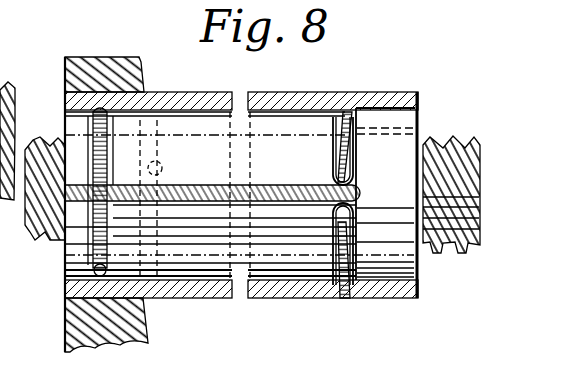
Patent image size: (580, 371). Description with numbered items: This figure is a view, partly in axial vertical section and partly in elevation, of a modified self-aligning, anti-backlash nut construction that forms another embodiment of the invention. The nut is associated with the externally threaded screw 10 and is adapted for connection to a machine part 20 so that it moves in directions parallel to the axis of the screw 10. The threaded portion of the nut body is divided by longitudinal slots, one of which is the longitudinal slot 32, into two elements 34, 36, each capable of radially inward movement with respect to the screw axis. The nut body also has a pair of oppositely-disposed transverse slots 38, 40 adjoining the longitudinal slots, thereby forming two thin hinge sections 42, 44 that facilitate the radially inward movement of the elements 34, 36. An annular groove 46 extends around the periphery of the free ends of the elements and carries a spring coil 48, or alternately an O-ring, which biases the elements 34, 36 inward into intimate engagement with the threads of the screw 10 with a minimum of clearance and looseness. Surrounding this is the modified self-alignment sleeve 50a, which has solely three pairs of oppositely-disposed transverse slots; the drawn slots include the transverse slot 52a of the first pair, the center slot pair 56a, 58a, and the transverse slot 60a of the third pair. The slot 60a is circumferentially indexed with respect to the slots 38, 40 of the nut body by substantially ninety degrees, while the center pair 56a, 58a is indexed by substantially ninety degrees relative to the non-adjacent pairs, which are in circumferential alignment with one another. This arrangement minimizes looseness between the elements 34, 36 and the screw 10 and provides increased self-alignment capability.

The screw 10 is at (1, 92).
The machine part 20 is at (96, 62).
The longitudinal slot 32 is at (298, 184).
The element 34 is at (183, 125).
The element 36 is at (185, 263).
The transverse slot 38 is at (335, 147).
The transverse slot 40 is at (335, 300).
The hinge section 42 is at (353, 182).
The hinge section 44 is at (353, 204).
The annular groove 46 is at (126, 150).
The spring coil 48 is at (103, 148).
The self-alignment sleeve 50a is at (290, 300).
The transverse slot 52a is at (179, 171).
The transverse slot 56a is at (242, 78).
The transverse slot 58a is at (234, 300).
The transverse slot 60a is at (343, 116).